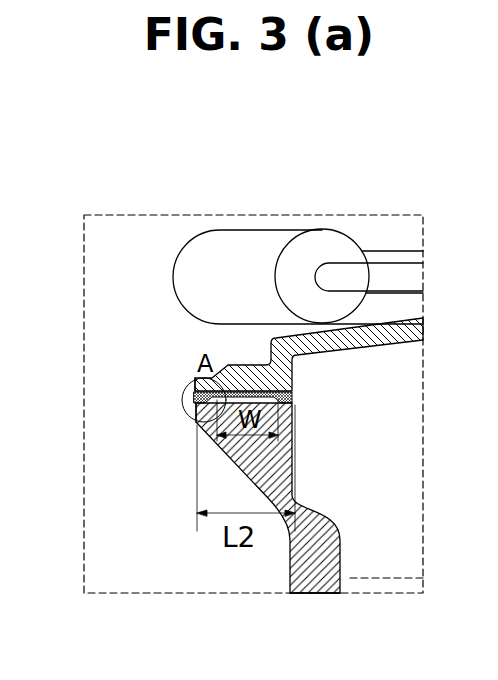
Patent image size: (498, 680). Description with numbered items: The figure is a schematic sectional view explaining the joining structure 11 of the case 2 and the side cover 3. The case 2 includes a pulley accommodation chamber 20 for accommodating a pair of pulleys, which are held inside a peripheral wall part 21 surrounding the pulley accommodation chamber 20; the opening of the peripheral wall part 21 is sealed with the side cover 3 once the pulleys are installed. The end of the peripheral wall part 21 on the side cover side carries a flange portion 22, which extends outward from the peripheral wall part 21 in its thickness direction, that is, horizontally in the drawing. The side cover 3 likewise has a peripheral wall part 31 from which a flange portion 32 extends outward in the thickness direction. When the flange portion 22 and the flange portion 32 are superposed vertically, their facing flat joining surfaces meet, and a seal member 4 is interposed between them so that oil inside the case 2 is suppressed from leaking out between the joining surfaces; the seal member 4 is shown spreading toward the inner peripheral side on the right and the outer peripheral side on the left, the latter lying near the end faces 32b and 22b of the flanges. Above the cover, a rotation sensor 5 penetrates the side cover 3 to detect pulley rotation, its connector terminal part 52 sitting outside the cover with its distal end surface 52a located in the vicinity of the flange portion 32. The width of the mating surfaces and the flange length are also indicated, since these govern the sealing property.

The joining structure 11 is at (160, 405).
The rotation sensor 5 is at (263, 225).
The connector terminal part 52 is at (263, 235).
The distal end surface 52a is at (172, 270).
The side cover 3 is at (282, 344).
The peripheral wall part 31 is at (287, 338).
The flange portion 32 is at (228, 368).
The end face of flange portion 32b is at (186, 386).
The seal member 4 is at (292, 398).
The case 2 is at (282, 525).
The flange portion 22 is at (228, 464).
The end face of joint portion 22b is at (190, 416).
The peripheral wall part 21 is at (327, 582).
The pulley accommodation chamber 20 is at (394, 509).